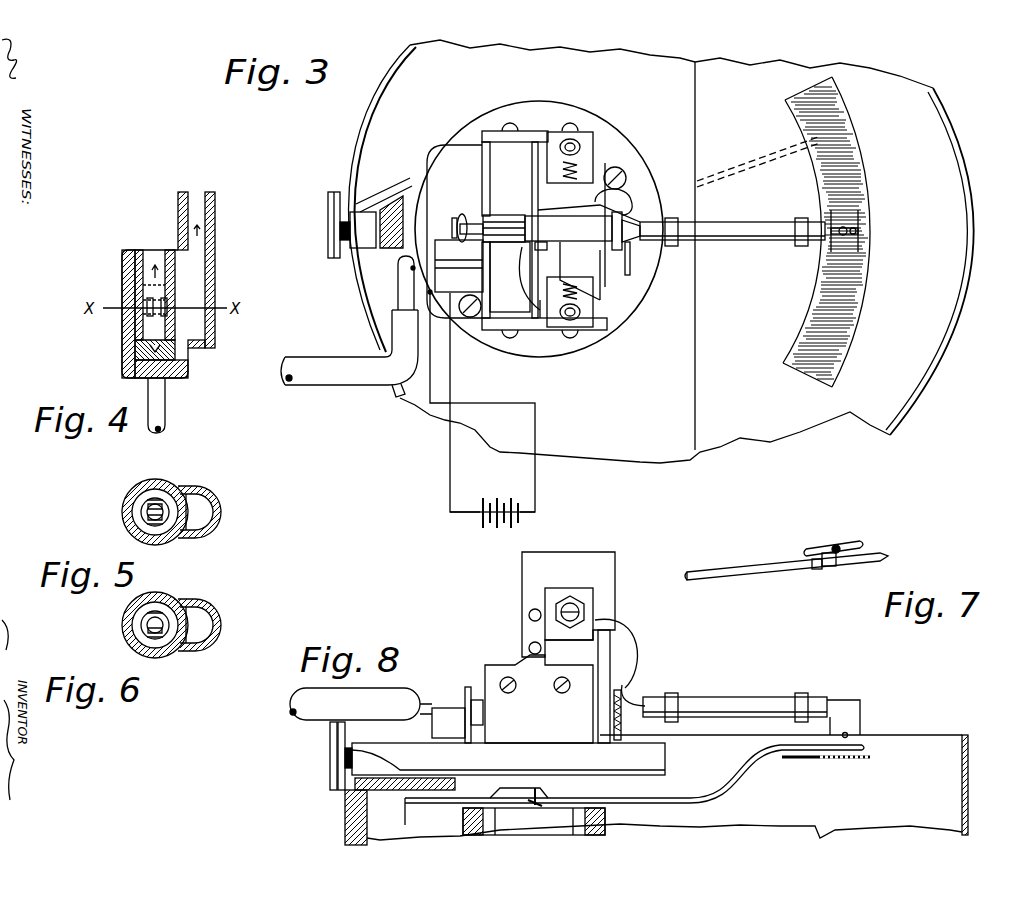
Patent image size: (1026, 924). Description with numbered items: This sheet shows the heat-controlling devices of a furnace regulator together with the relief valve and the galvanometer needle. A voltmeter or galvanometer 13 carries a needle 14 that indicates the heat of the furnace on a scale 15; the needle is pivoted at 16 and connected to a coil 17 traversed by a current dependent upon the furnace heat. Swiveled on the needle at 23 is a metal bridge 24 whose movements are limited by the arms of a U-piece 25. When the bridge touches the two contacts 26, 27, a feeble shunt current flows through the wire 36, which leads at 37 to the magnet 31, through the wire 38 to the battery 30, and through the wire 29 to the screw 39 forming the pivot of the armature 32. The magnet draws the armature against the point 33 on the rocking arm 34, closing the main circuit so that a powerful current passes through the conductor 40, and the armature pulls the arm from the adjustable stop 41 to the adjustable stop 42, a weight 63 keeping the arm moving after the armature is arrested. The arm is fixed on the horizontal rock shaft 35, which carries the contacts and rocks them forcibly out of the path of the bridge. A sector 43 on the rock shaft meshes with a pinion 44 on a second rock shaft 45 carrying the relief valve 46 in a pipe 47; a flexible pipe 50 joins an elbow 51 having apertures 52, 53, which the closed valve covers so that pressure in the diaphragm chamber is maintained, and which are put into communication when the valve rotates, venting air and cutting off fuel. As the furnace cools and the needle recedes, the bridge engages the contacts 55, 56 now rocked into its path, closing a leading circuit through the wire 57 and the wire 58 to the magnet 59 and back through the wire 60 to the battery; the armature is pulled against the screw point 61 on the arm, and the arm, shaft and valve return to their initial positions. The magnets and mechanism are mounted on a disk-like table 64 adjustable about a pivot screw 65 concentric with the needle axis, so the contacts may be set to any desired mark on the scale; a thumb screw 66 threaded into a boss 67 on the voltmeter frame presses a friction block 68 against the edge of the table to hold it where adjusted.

In FIG. 8, the voltmeter or galvanometer 13 is at (667, 787).
In FIG. 7, the needle 14 is at (728, 583).
In FIG. 8, the needle 14 is at (742, 778).
In FIG. 3, the scale 15 is at (858, 318).
In FIG. 8, the scale 15 is at (868, 760).
In FIG. 8, the pivot 16 is at (553, 790).
In FIG. 8, the coil 17 is at (565, 827).
In FIG. 7, the swivel 23 is at (838, 566).
In FIG. 7, the metal bridge 24 is at (846, 536).
In FIG. 7, the U-piece 25 is at (816, 570).
In FIG. 3, the contact 26 is at (862, 245).
In FIG. 8, the contact 26 is at (863, 716).
In FIG. 3, the contact 27 is at (822, 242).
In FIG. 8, the contact 27 is at (843, 719).
In FIG. 3, the main circuit conductor 29 is at (451, 489).
In FIG. 3, the battery 30 is at (486, 527).
In FIG. 3, the magnet 31 is at (544, 230).
In FIG. 8, the magnet 31 is at (510, 664).
In FIG. 3, the armature 32 is at (515, 212).
In FIG. 3, the screw point 33 is at (575, 196).
In FIG. 3, the rocking arm 34 is at (634, 218).
In FIG. 3, the rock shaft 35 is at (632, 248).
In FIG. 3, the wire 36 is at (630, 198).
In FIG. 8, the wire 36 is at (640, 635).
In FIG. 3, the wire lead 37 is at (532, 200).
In FIG. 3, the wire 38 is at (465, 163).
In FIG. 3, the screw 39 is at (464, 214).
In FIG. 8, the screw 39 is at (476, 680).
In FIG. 3, the conductor 40 is at (455, 357).
In FIG. 3, the adjustable stop 41 is at (575, 327).
In FIG. 3, the adjustable stop 42 is at (578, 140).
In FIG. 3, the sector 43 is at (603, 231).
In FIG. 8, the sector 43 is at (608, 700).
In FIG. 3, the pinion 44 is at (612, 290).
In FIG. 8, the pinion 44 is at (508, 759).
In FIG. 3, the rock shaft 45 is at (606, 312).
In FIG. 4, the rock shaft 45 is at (167, 415).
In FIG. 4, the relief valve 46 is at (136, 250).
In FIG. 5, the relief valve 46 is at (170, 498).
In FIG. 6, the relief valve 46 is at (168, 612).
In FIG. 4, the pipe 47 is at (122, 292).
In FIG. 5, the pipe 47 is at (122, 515).
In FIG. 6, the pipe 47 is at (122, 628).
In FIG. 3, the flexible pipe 50 is at (332, 355).
In FIG. 8, the flexible pipe 50 is at (361, 704).
In FIG. 3, the elbow 51 is at (397, 287).
In FIG. 4, the elbow 51 is at (216, 287).
In FIG. 5, the elbow 51 is at (218, 517).
In FIG. 6, the elbow 51 is at (218, 628).
In FIG. 8, the elbow 51 is at (440, 706).
In FIG. 5, the aperture 52 is at (158, 530).
In FIG. 6, the aperture 52 is at (156, 645).
In FIG. 5, the aperture 53 is at (156, 498).
In FIG. 3, the contact 55 is at (862, 222).
In FIG. 3, the contact 56 is at (828, 222).
In FIG. 3, the wire 57 is at (580, 271).
In FIG. 8, the wire 57 is at (640, 676).
In FIG. 3, the wire 58 is at (523, 278).
In FIG. 3, the magnet 59 is at (510, 277).
In FIG. 3, the wire 60 is at (532, 300).
In FIG. 3, the screw point 61 is at (546, 255).
In FIG. 3, the weight 63 is at (568, 228).
In FIG. 8, the weight 63 is at (568, 647).
In FIG. 3, the table 64 is at (648, 316).
In FIG. 8, the table 64 is at (655, 752).
In FIG. 8, the pivot screw 65 is at (645, 776).
In FIG. 3, the thumb screw 66 is at (326, 255).
In FIG. 3, the boss 67 is at (363, 230).
In FIG. 3, the friction block 68 is at (392, 192).